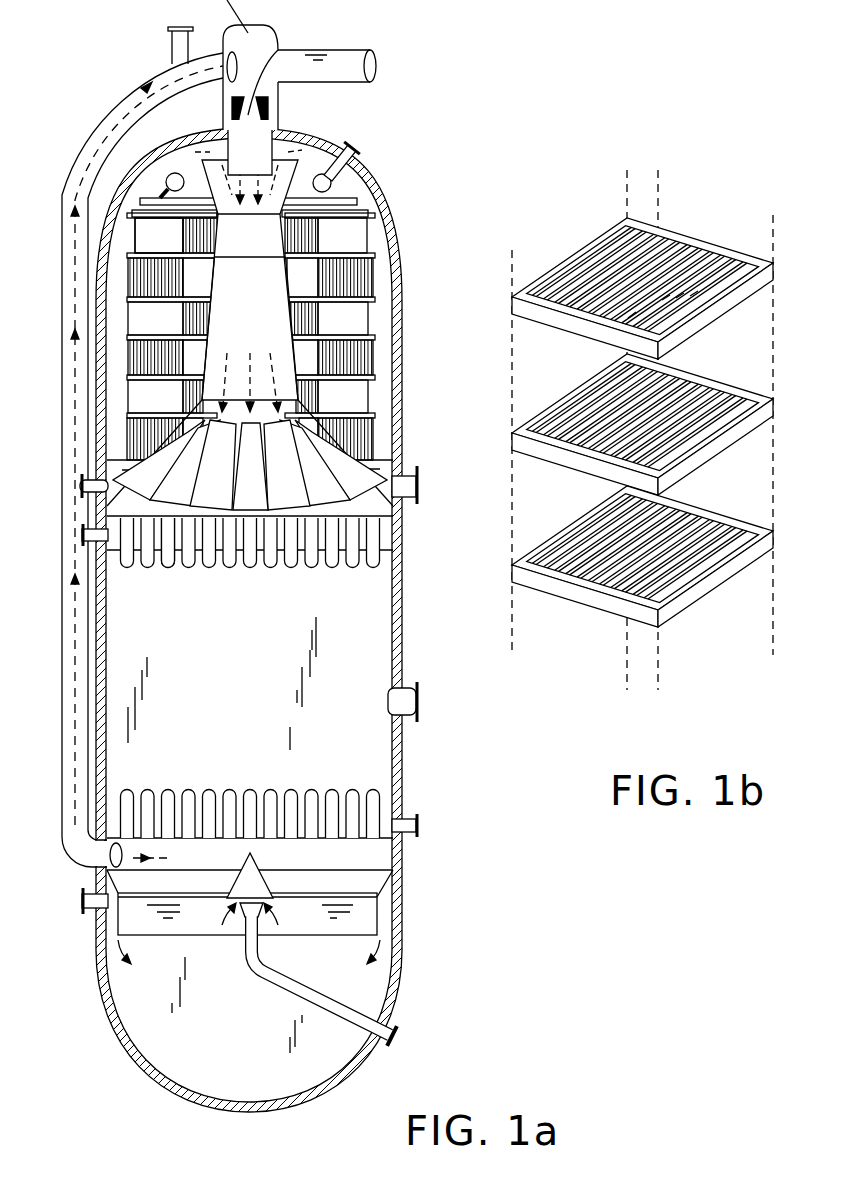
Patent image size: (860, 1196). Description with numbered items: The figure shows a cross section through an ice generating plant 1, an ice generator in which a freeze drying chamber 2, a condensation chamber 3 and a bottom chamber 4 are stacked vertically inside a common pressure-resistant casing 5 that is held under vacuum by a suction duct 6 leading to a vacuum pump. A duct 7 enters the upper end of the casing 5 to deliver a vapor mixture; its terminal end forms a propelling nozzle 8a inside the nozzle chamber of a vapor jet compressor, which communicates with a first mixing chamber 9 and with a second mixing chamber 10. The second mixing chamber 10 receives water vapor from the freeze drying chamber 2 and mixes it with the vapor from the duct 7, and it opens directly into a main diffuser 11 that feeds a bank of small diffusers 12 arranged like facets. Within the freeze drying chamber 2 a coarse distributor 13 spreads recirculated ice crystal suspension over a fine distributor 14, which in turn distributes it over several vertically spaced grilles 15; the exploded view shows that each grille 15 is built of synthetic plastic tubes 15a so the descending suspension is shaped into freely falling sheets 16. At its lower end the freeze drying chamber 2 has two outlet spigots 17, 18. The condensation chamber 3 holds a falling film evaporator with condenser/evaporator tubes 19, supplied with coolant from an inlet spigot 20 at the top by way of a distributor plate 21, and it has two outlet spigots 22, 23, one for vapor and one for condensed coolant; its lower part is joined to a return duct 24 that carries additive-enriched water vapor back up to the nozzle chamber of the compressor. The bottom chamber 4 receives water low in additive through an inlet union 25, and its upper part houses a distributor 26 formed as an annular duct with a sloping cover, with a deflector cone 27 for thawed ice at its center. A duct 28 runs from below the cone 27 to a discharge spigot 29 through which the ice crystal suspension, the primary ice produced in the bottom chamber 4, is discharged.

In FIG. 1a, the ice generating plant 1 is at (406, 291).
In FIG. 1a, the freeze drying chamber 2 is at (388, 322).
In FIG. 1a, the condensation chamber 3 is at (380, 647).
In FIG. 1a, the bottom chamber 4 is at (152, 1023).
In FIG. 1a, the pressure-resistant casing 5 is at (403, 413).
In FIG. 1a, the suction duct 6 is at (170, 40).
In FIG. 1a, the duct 7 is at (364, 65).
In FIG. 1a, the propelling nozzle 8a is at (262, 85).
In FIG. 1a, the first mixing chamber 9 is at (254, 157).
In FIG. 1a, the second mixing chamber 10 is at (262, 251).
In FIG. 1a, the main diffuser 11 is at (262, 342).
In FIG. 1a, the small diffusers 12 is at (263, 504).
In FIG. 1a, the coarse distributor 13 is at (356, 153).
In FIG. 1a, the fine distributor 14 is at (358, 205).
In FIG. 1a, the grilles 15 is at (376, 258).
In FIG. 1b, the grilles 15 is at (540, 450).
In FIG. 1b, the synthetic plastic tubes 15a is at (573, 300).
In FIG. 1a, the freely falling sheets 16 is at (172, 251).
In FIG. 1a, the outlet spigot 17 is at (414, 483).
In FIG. 1a, the outlet spigot 18 is at (90, 485).
In FIG. 1a, the condenser/evaporator tubes 19 is at (273, 553).
In FIG. 1a, the inlet spigot 20 is at (83, 537).
In FIG. 1a, the distributor plate 21 is at (160, 552).
In FIG. 1a, the outlet spigot 22 is at (412, 703).
In FIG. 1a, the outlet spigot 23 is at (418, 828).
In FIG. 1a, the return duct 24 is at (73, 722).
In FIG. 1a, the inlet union 25 is at (90, 903).
In FIG. 1a, the distributor 26 is at (178, 882).
In FIG. 1a, the deflector cone 27 is at (249, 872).
In FIG. 1a, the duct 28 is at (273, 985).
In FIG. 1a, the discharge spigot 29 is at (398, 1043).